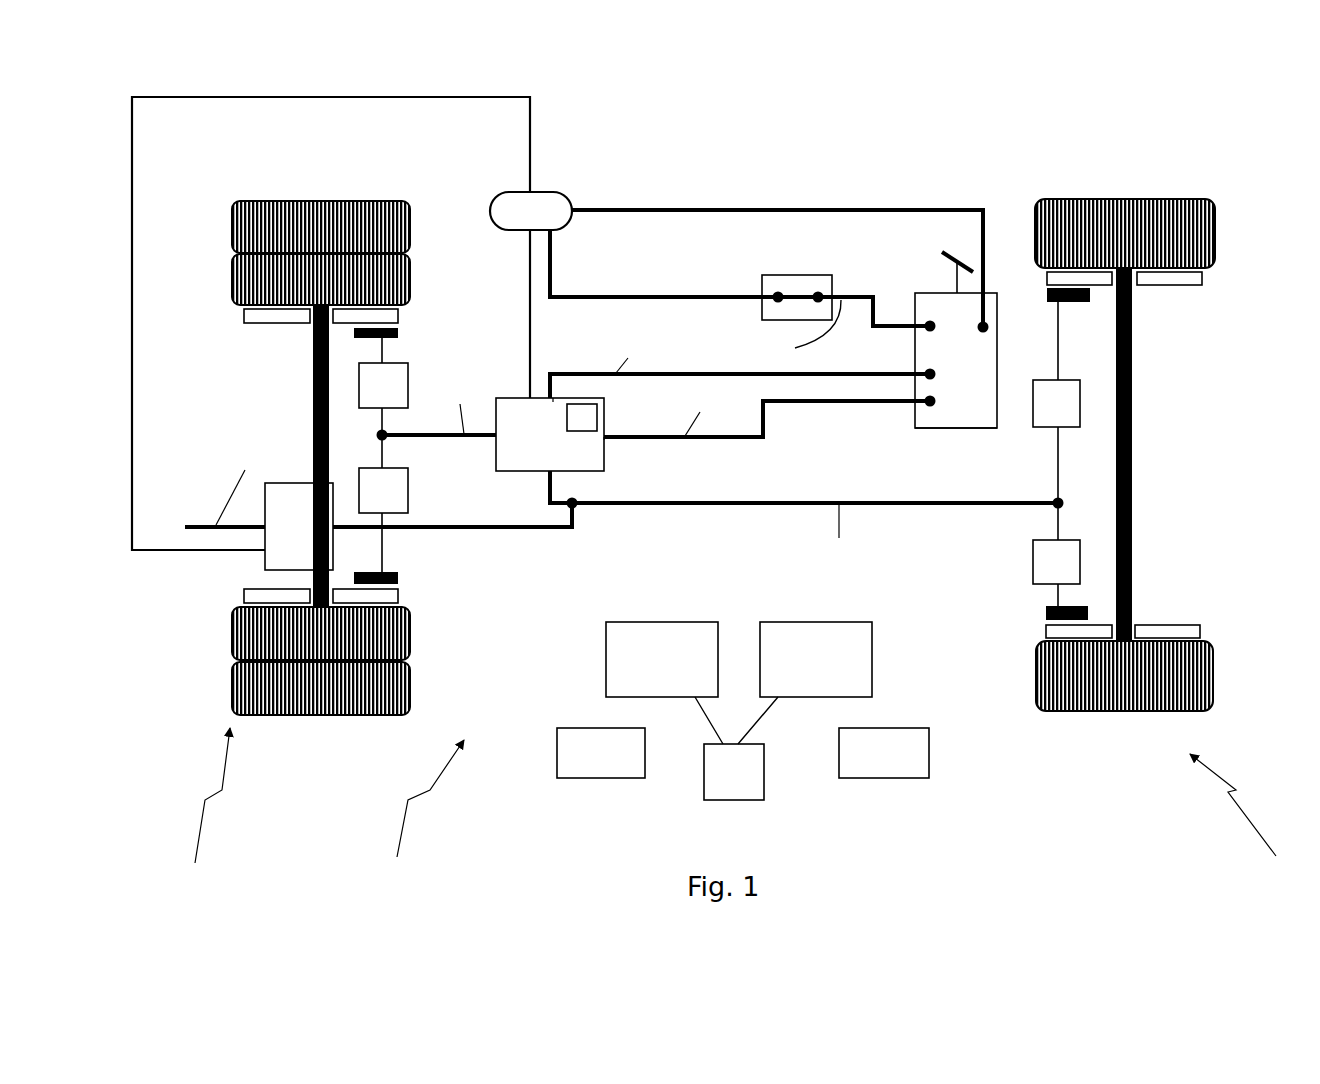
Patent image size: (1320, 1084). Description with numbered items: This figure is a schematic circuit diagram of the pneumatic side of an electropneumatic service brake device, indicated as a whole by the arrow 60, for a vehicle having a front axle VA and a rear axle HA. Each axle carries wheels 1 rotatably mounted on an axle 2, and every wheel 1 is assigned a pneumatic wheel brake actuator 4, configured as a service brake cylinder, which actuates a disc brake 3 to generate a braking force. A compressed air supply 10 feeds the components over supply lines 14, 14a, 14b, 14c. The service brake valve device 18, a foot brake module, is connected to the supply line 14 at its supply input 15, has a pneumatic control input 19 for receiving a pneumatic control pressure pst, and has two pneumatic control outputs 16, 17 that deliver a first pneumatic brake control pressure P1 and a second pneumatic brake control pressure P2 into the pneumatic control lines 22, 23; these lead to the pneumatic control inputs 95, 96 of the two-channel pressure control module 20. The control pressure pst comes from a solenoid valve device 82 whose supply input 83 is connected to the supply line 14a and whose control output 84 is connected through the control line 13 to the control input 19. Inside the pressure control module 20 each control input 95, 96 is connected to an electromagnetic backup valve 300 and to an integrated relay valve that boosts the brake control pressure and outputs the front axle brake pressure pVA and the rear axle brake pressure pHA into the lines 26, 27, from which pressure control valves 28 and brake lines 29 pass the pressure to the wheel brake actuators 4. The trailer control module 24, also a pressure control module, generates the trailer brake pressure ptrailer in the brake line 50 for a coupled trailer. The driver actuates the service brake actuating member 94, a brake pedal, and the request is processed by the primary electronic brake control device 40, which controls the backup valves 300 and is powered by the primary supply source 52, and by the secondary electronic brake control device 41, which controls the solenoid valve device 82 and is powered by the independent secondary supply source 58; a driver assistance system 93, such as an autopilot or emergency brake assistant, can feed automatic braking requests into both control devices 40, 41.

The wheel 1 is at (304, 200).
The axle 2 is at (312, 372).
The disc brake 3 is at (262, 324).
The wheel brake actuator 4 is at (398, 332).
The compressed air supply 10 is at (531, 211).
The control line 13 is at (863, 304).
The supply line 14 is at (980, 210).
The supply line 14a is at (676, 296).
The supply line 14b is at (528, 314).
The supply line 14c is at (140, 553).
The supply input 15 is at (970, 315).
The control output 16 is at (914, 372).
The control output 17 is at (912, 410).
The service brake valve device 18 is at (940, 430).
The pneumatic control input 19 is at (914, 304).
The pressure control module 20 is at (550, 434).
The control line 22 is at (690, 378).
The control line 23 is at (752, 440).
The trailer control module 24 is at (299, 526).
The line 26 is at (578, 508).
The line 27 is at (416, 438).
The pressure control valve 28 is at (719, 473).
The brake line 29 is at (385, 352).
The primary electronic brake control device 40 is at (800, 698).
The secondary electronic brake control device 41 is at (655, 698).
The brake line 50 is at (200, 524).
The primary supply source 52 is at (920, 779).
The secondary supply source 58 is at (573, 779).
The braking system 60 is at (416, 808).
The solenoid valve device 82 is at (760, 320).
The supply input 83 is at (774, 285).
The control output 84 is at (820, 284).
The driver assistance system 93 is at (736, 748).
The service brake actuating member 94 is at (960, 249).
The pneumatic control input 95 is at (554, 398).
The pneumatic control input 96 is at (605, 438).
The backup valve 300 is at (584, 410).
The first pneumatic brake control pressure P1 is at (636, 350).
The second pneumatic brake control pressure P2 is at (699, 415).
The rear axle brake pressure pHA is at (456, 410).
The front axle brake pressure pVA is at (841, 530).
The trailer brake pressure ptrailer is at (378, 484).
The pneumatic control pressure pst is at (803, 330).
The rear axle HA is at (204, 810).
The front axle VA is at (1236, 821).